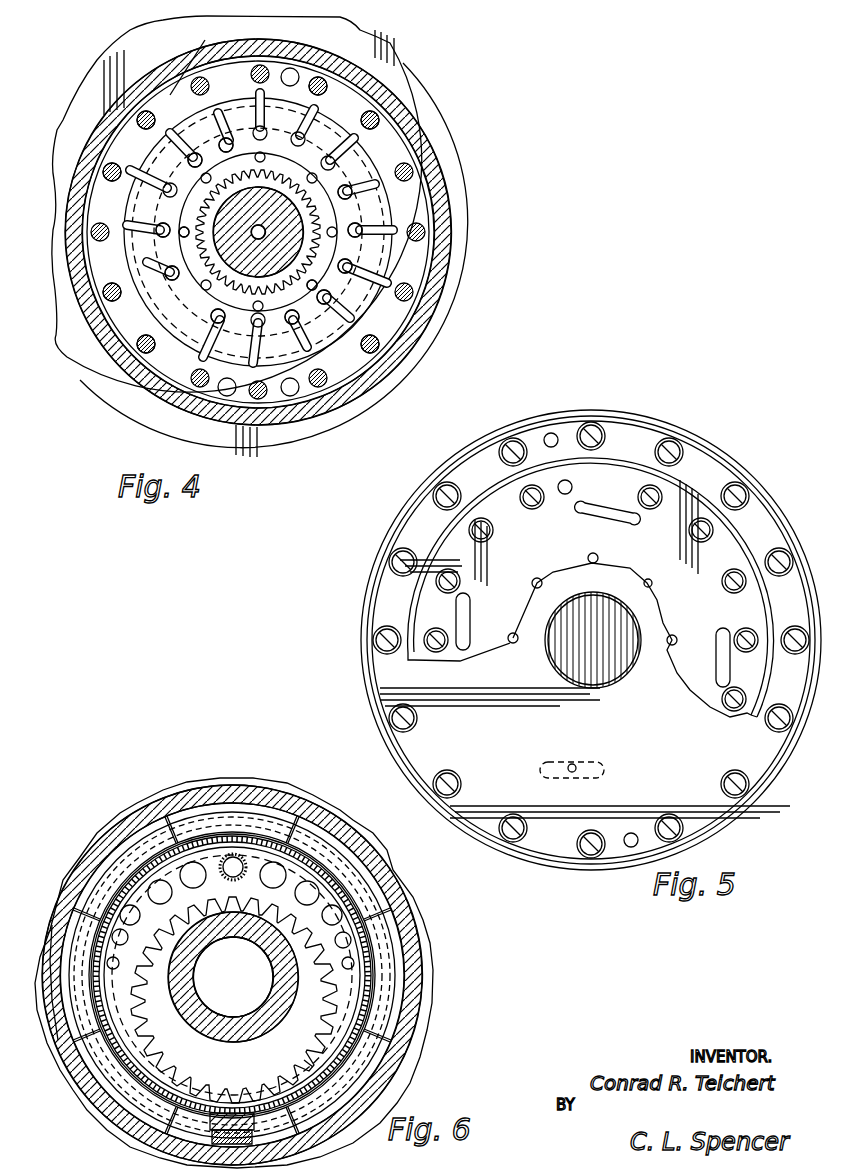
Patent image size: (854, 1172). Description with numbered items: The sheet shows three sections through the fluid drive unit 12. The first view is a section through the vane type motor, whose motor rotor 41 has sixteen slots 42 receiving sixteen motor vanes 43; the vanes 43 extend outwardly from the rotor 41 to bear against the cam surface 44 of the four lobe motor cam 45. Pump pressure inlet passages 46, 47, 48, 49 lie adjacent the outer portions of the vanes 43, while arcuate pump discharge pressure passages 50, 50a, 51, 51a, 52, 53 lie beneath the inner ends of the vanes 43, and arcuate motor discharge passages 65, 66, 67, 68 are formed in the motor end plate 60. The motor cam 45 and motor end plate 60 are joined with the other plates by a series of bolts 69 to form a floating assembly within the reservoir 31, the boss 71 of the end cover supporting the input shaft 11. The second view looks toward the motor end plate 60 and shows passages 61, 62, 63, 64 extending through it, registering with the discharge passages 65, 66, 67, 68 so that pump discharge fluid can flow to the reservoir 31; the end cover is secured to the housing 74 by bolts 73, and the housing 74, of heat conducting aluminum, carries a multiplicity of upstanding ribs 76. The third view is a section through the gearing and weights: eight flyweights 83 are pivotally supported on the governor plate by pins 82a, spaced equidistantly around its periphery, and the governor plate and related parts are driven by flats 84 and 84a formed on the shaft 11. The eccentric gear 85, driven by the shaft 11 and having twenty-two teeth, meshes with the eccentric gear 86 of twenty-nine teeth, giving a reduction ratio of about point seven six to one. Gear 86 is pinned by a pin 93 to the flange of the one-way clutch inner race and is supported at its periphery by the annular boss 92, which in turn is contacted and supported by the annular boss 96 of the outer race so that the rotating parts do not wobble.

In FIG. 4, the input shaft 11 is at (262, 185).
In FIG. 6, the input shaft 11 is at (200, 1020).
In FIG. 4, the housing 12 is at (460, 118).
In FIG. 5, the housing 12 is at (738, 462).
In FIG. 5, the reservoir 31 is at (697, 690).
In FIG. 4, the motor rotor 41 is at (364, 158).
In FIG. 4, the slots 42 is at (208, 185).
In FIG. 4, the motor vanes 43 is at (160, 196).
In FIG. 4, the cam surface 44 is at (128, 192).
In FIG. 4, the four lobe motor cam 45 is at (192, 58).
In FIG. 4, the pump pressure inlet passage 46 is at (326, 110).
In FIG. 4, the pump pressure inlet passage 47 is at (384, 330).
In FIG. 4, the pump pressure inlet passage 48 is at (184, 352).
In FIG. 4, the pump pressure inlet passage 49 is at (152, 148).
In FIG. 4, the pump discharge pressure passage 50 is at (296, 134).
In FIG. 4, the pump discharge pressure passage 50a is at (347, 265).
In FIG. 4, the pump discharge pressure passage 51 is at (300, 256).
In FIG. 4, the pump discharge pressure passage 51a is at (320, 327).
In FIG. 4, the pump discharge pressure passage 52 is at (186, 300).
In FIG. 4, the pump discharge pressure passage 53 is at (200, 150).
In FIG. 5, the motor end plate 60 is at (724, 546).
In FIG. 5, the passage 61 is at (606, 506).
In FIG. 5, the passage 62 is at (716, 645).
In FIG. 5, the passage 63 is at (576, 764).
In FIG. 5, the passage 64 is at (470, 610).
In FIG. 4, the motor discharge passage 65 is at (240, 90).
In FIG. 4, the motor discharge passage 66 is at (392, 188).
In FIG. 4, the motor discharge passage 67 is at (258, 232).
In FIG. 4, the motor discharge passage 68 is at (120, 248).
In FIG. 4, the bolts 69 is at (380, 120).
In FIG. 5, the bolts 69 is at (530, 508).
In FIG. 4, the boss 71 is at (347, 257).
In FIG. 5, the bolts 73 is at (612, 440).
In FIG. 4, the housing 74 is at (418, 258).
In FIG. 6, the housing 74 is at (400, 920).
In FIG. 4, the upstanding ribs 76 is at (472, 150).
In FIG. 6, the upstanding ribs 76 is at (380, 845).
In FIG. 6, the pins 82a is at (214, 805).
In FIG. 6, the flyweights 83 is at (264, 810).
In FIG. 6, the flat 84 is at (232, 925).
In FIG. 6, the flat 84a is at (240, 1040).
In FIG. 6, the eccentric gear 85 is at (258, 952).
In FIG. 6, the eccentric gear 86 is at (301, 1050).
In FIG. 6, the annular boss 92 is at (330, 840).
In FIG. 6, the pin 93 is at (234, 872).
In FIG. 6, the annular boss 96 is at (350, 848).